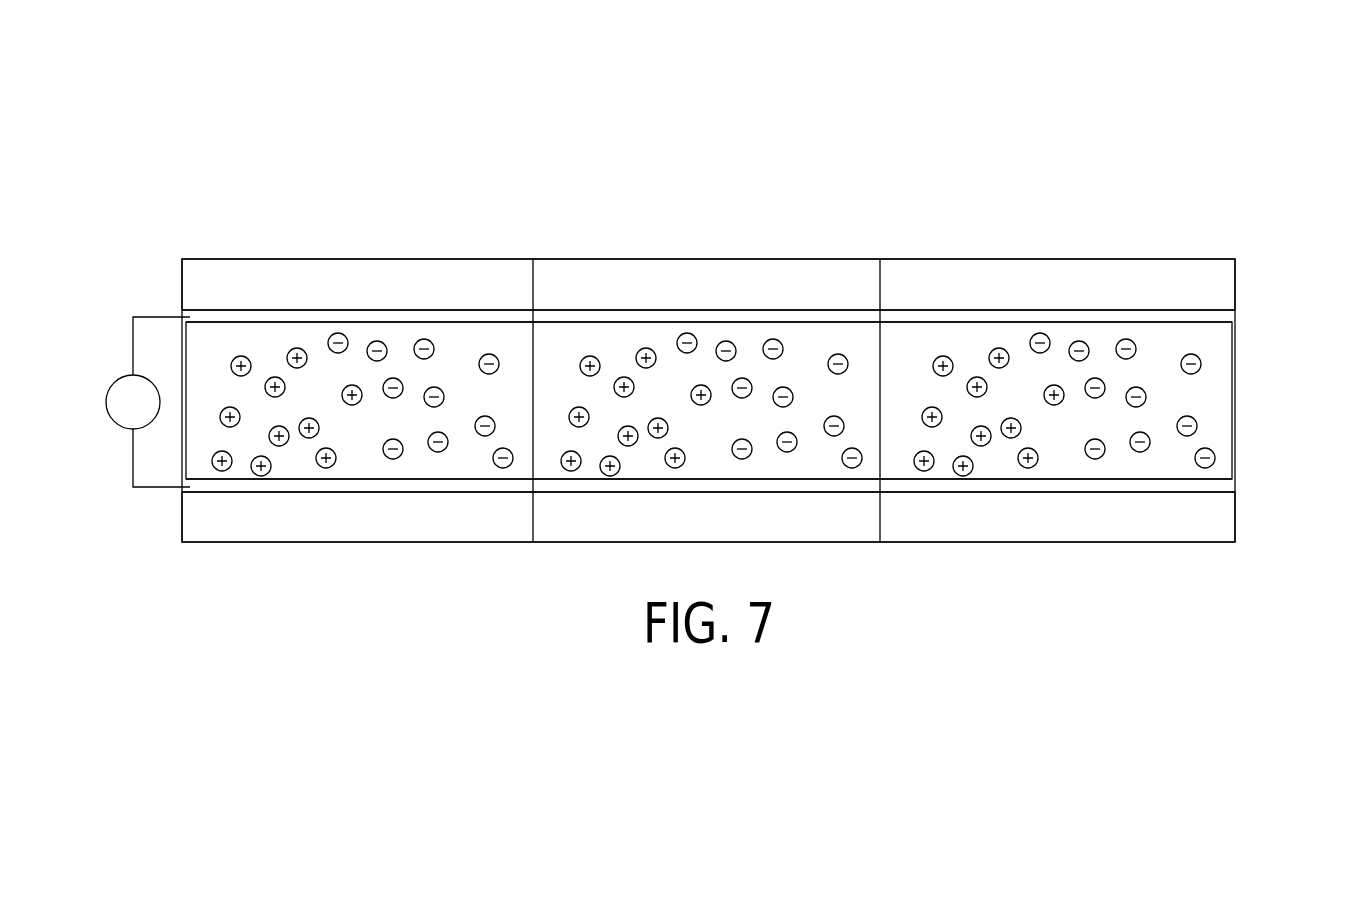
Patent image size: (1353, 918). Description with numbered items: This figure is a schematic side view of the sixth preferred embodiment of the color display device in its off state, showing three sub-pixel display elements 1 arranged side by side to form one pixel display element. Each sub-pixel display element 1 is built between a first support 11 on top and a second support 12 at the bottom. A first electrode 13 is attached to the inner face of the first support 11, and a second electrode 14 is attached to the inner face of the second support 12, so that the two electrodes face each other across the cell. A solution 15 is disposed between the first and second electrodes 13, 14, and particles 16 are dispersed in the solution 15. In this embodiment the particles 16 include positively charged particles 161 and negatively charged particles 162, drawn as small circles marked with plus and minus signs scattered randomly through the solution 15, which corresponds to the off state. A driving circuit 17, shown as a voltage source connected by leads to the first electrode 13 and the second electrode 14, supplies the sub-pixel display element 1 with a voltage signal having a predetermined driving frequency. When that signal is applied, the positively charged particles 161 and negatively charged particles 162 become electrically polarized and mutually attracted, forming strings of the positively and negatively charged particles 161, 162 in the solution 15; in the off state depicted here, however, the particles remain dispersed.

The sub-pixel display element 1 is at (1027, 232).
The first support 11 is at (1213, 280).
The second support 12 is at (1217, 522).
The first electrode 13 is at (1218, 313).
The second electrode 14 is at (1222, 483).
The solution 15 is at (363, 330).
The particles 16 is at (242, 356).
The positively charged particles 161 is at (224, 407).
The negatively charged particles 162 is at (333, 337).
The driving circuit 17 is at (116, 378).